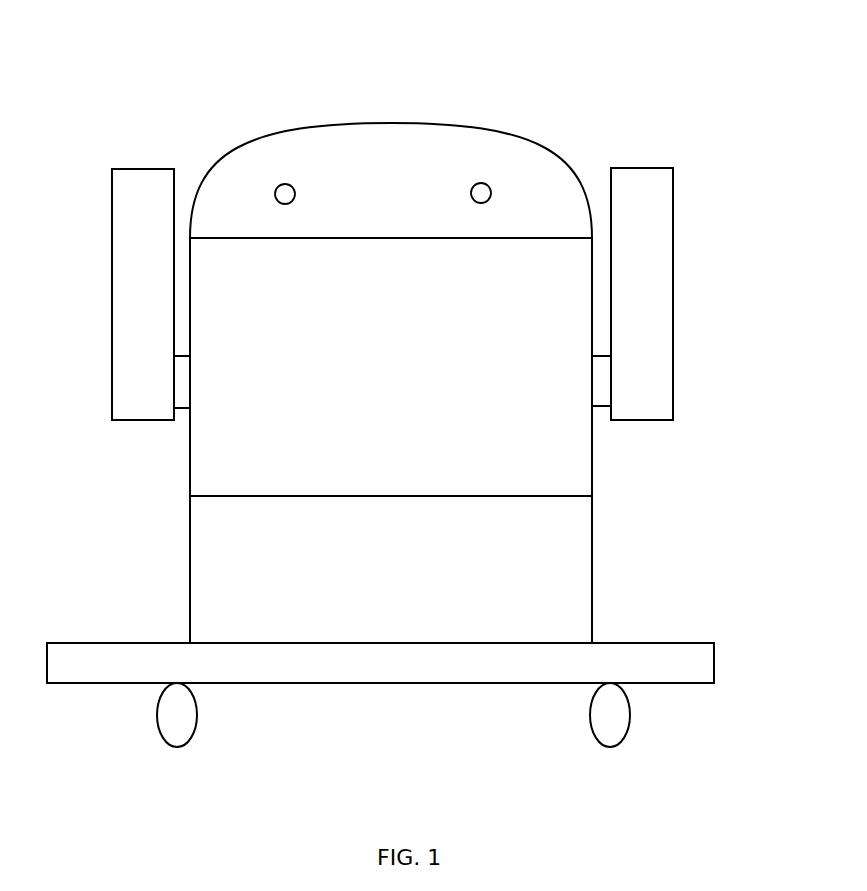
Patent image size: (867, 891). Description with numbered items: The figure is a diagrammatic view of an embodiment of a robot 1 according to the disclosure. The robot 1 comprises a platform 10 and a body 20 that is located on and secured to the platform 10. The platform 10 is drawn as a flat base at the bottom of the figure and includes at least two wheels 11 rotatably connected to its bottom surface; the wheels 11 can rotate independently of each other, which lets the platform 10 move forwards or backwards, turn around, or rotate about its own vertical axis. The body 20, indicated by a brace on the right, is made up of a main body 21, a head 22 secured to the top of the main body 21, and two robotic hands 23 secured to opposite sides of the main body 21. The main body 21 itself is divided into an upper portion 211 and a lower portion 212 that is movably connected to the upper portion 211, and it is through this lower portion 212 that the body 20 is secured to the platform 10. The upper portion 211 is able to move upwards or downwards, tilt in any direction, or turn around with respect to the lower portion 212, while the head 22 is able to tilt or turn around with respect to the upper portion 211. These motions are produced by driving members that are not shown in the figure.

The robot 1 is at (267, 92).
The platform 10 is at (634, 643).
The wheels 11 is at (169, 717).
The body 20 is at (733, 202).
The main body 21 is at (605, 470).
The upper portion 211 is at (208, 474).
The lower portion 212 is at (203, 542).
The head 22 is at (580, 210).
The robotic hands 23 is at (141, 212).